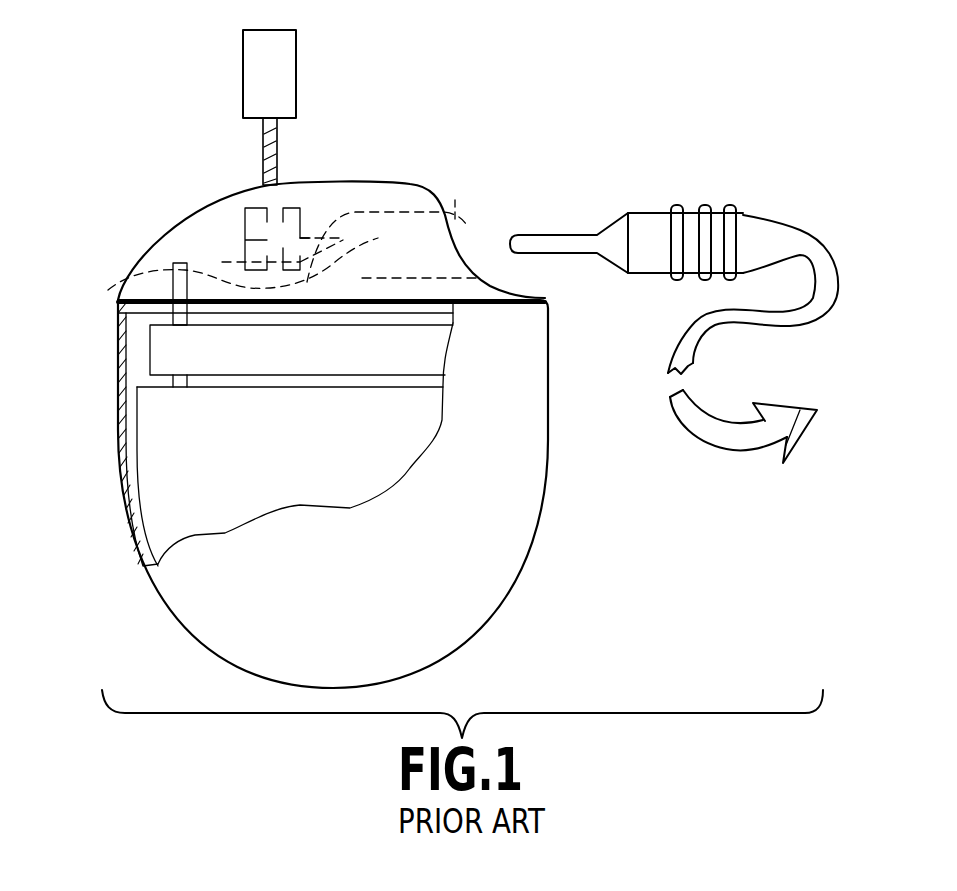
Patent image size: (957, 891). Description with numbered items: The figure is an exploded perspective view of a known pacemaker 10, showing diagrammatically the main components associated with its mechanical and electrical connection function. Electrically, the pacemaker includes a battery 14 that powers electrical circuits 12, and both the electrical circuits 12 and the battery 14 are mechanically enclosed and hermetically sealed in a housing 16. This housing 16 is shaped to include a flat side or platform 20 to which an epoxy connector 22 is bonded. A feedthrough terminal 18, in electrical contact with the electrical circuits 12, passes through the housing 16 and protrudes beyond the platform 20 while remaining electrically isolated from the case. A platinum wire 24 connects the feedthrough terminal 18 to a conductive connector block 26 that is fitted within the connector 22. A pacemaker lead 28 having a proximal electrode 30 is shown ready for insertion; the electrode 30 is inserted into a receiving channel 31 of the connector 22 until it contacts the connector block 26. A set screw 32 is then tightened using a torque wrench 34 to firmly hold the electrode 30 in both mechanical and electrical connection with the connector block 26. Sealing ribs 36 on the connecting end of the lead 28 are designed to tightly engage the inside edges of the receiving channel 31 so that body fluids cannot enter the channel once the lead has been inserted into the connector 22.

The pacemaker 10 is at (175, 197).
The electrical circuits 12 is at (168, 350).
The battery 14 is at (157, 472).
The housing 16 is at (527, 453).
The feedthrough terminal 18 is at (118, 288).
The platform 20 is at (500, 291).
The epoxy connector 22 is at (163, 258).
The platinum wire 24 is at (352, 247).
The connector block 26 is at (325, 240).
The pacemaker lead 28 is at (672, 363).
The proximal electrode 30 is at (567, 235).
The receiving channel 31 is at (455, 222).
The set screw 32 is at (265, 205).
The torque wrench 34 is at (296, 88).
The sealing ribs 36 is at (732, 207).